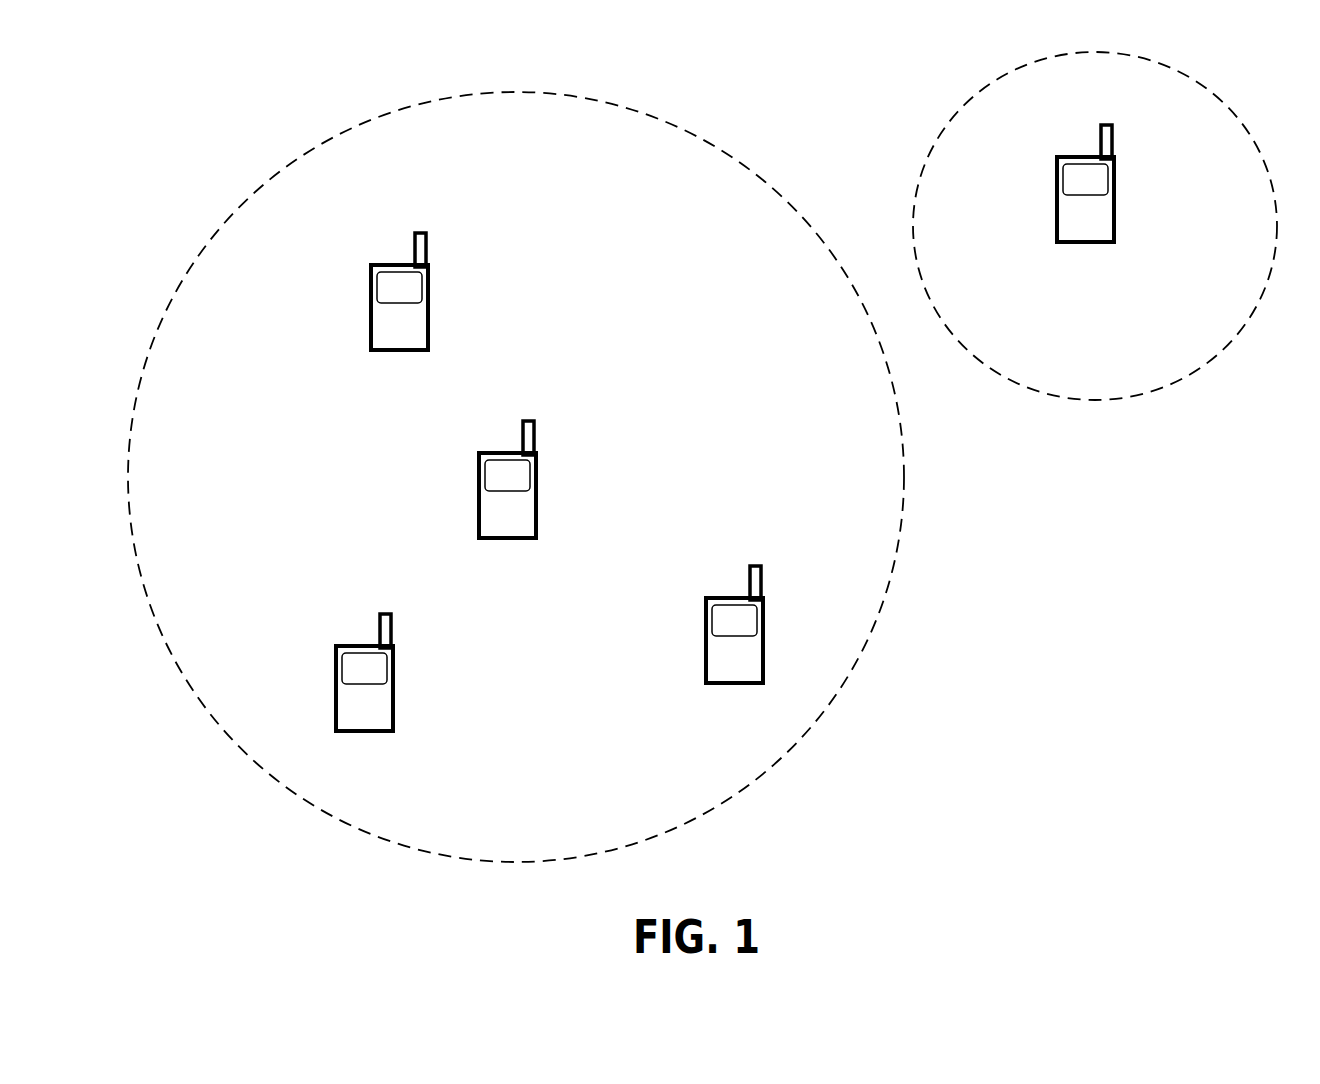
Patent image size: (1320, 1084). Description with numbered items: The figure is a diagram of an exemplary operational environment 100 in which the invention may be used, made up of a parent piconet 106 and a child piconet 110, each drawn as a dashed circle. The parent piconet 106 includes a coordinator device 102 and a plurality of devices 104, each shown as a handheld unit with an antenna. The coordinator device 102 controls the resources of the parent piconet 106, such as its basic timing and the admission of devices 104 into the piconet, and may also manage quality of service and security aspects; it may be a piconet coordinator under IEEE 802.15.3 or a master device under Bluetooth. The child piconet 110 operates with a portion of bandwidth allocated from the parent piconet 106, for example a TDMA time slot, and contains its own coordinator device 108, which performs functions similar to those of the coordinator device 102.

The operational environment 100 is at (208, 110).
The coordinator device 102 is at (518, 508).
The devices 104 is at (575, 504).
The parent piconet 106 is at (678, 128).
The coordinator device 108 is at (1105, 211).
The child piconet 110 is at (1150, 392).